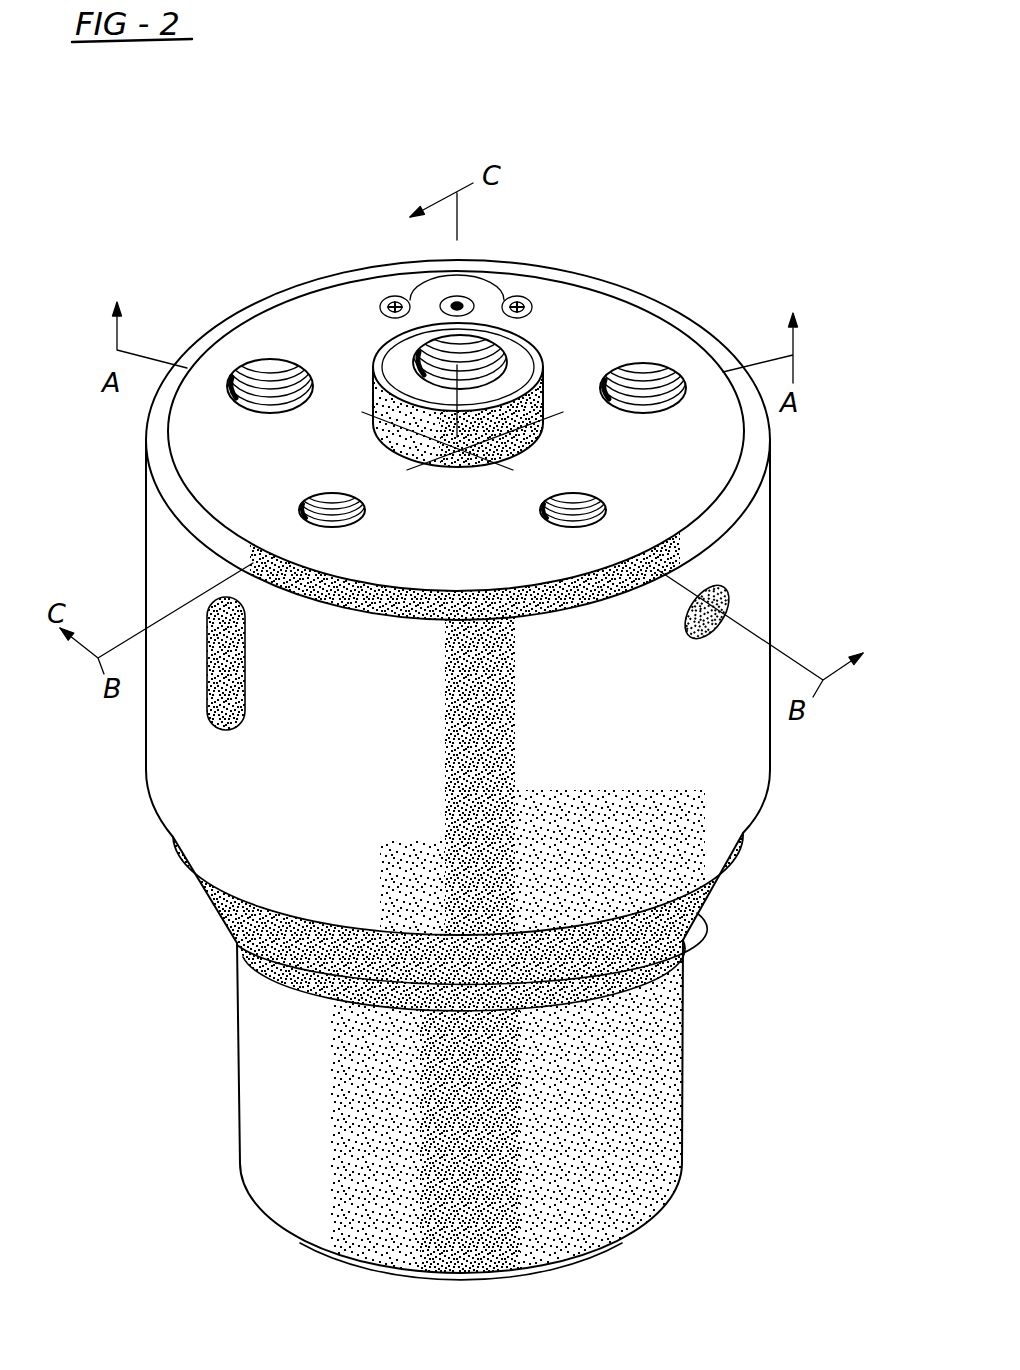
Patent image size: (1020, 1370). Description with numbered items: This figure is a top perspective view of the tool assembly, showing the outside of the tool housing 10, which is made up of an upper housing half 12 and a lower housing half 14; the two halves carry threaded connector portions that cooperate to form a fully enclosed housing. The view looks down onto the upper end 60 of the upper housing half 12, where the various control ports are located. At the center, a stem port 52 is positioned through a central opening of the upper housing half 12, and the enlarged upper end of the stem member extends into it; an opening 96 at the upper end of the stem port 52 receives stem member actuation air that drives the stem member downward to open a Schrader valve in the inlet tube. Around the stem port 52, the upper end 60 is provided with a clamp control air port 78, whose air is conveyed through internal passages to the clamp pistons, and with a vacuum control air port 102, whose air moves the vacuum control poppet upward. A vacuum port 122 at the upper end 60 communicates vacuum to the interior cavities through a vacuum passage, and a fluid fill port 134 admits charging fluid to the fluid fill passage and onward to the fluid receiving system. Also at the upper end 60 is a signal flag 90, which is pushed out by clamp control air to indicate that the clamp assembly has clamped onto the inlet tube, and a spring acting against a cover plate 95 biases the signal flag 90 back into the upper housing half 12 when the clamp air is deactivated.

The tool housing 10 is at (528, 775).
The upper housing half 12 is at (772, 556).
The lower housing half 14 is at (688, 1051).
The stem port 52 is at (503, 352).
The upper end 60 is at (320, 297).
The clamp control air port 78 is at (587, 497).
The signal flag 90 is at (463, 303).
The cover plate 95 is at (430, 297).
The opening 96 is at (503, 353).
The port 102 is at (323, 497).
The vacuum port 122 is at (650, 377).
The fluid fill port 134 is at (277, 380).